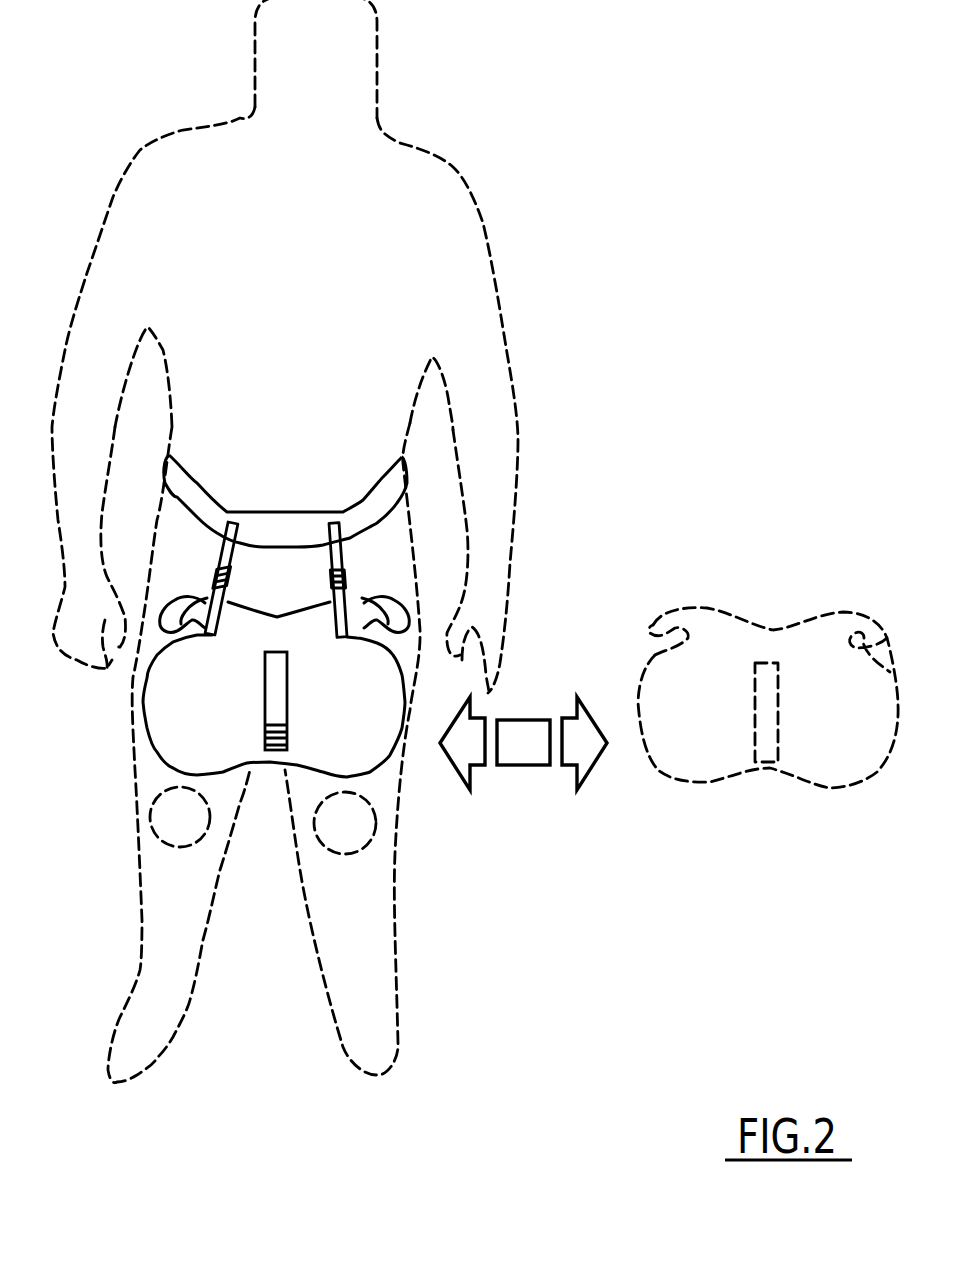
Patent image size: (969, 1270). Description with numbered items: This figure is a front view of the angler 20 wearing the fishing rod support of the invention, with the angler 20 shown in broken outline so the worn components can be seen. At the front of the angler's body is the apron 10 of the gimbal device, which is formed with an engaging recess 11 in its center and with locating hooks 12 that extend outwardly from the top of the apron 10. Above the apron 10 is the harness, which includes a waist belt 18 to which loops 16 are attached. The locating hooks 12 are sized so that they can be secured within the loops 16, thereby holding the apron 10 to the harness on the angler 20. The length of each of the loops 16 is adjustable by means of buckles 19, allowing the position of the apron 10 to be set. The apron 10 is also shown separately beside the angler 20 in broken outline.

The apron 10 is at (182, 748).
The engaging recess 11 is at (278, 697).
The locating hooks 12 is at (160, 620).
The loops 16 is at (322, 512).
The waist belt 18 is at (378, 517).
The buckles 19 is at (327, 582).
The angler 20 is at (433, 208).